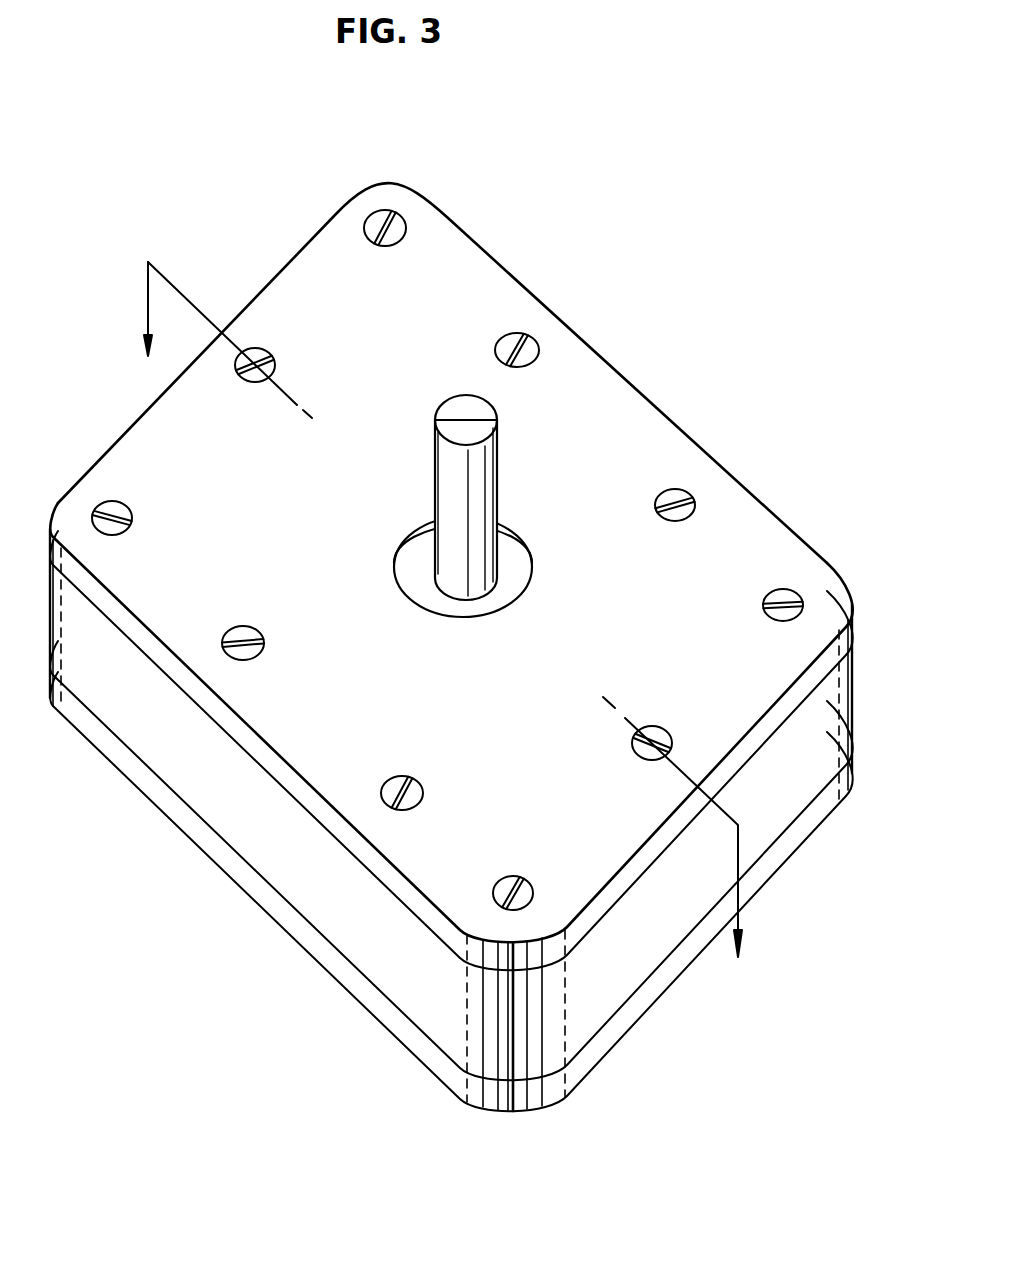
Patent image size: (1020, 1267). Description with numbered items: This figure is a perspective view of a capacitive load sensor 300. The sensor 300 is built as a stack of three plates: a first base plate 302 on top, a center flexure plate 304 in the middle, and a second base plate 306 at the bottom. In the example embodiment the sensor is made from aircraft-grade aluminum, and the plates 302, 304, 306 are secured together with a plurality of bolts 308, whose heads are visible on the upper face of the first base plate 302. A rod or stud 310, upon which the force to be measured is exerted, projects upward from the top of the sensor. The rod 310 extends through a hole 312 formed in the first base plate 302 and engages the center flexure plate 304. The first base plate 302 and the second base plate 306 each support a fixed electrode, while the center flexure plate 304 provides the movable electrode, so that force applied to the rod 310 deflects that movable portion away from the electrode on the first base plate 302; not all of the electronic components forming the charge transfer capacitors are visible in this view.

The capacitive load sensor 300 is at (485, 629).
The first base plate 302 is at (847, 636).
The center flexure plate 304 is at (841, 717).
The second base plate 306 is at (840, 782).
The bolts 308 is at (130, 517).
The rod 310 is at (489, 448).
The hole 312 is at (526, 556).